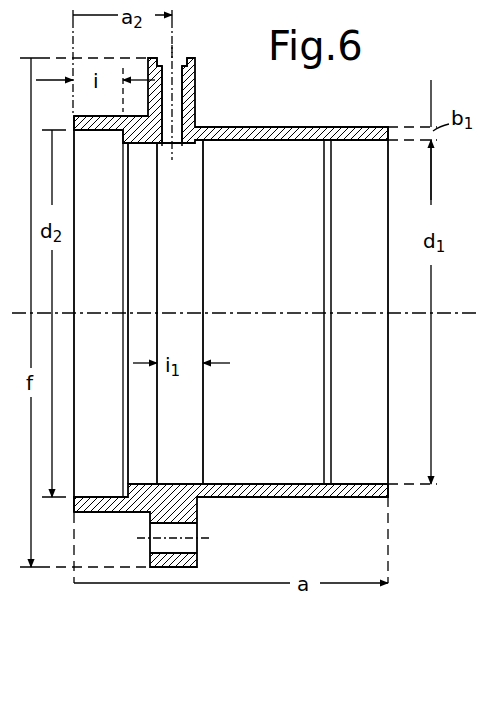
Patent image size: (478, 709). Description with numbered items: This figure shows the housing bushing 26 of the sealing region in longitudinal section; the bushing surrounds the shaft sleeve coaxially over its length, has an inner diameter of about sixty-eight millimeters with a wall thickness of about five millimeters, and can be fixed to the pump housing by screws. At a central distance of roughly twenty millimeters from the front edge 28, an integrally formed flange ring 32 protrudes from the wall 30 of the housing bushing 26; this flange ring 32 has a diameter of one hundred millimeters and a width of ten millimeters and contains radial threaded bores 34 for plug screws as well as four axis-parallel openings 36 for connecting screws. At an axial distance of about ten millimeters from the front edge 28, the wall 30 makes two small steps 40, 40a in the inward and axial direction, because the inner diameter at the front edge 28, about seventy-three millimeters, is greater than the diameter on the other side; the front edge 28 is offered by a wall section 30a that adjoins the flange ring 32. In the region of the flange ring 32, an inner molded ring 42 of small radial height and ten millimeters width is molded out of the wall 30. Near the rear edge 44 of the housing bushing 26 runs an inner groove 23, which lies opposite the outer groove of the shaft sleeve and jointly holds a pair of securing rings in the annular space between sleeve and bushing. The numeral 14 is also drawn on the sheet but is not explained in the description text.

The coupling 14 is at (466, 377).
The partition wall 23 is at (326, 377).
The housing 26 is at (269, 303).
The outer wall 28 is at (76, 289).
The top wall 30 is at (283, 141).
The step of top wall 30a is at (141, 140).
The bottom wall 32 is at (165, 521).
The upper boss bore 34 is at (178, 94).
The lower boss bore 36 is at (200, 537).
The sleeve 40 is at (122, 349).
The sleeve inner wall 40a is at (128, 411).
The groove 42 is at (185, 242).
The right wall 44 is at (387, 240).